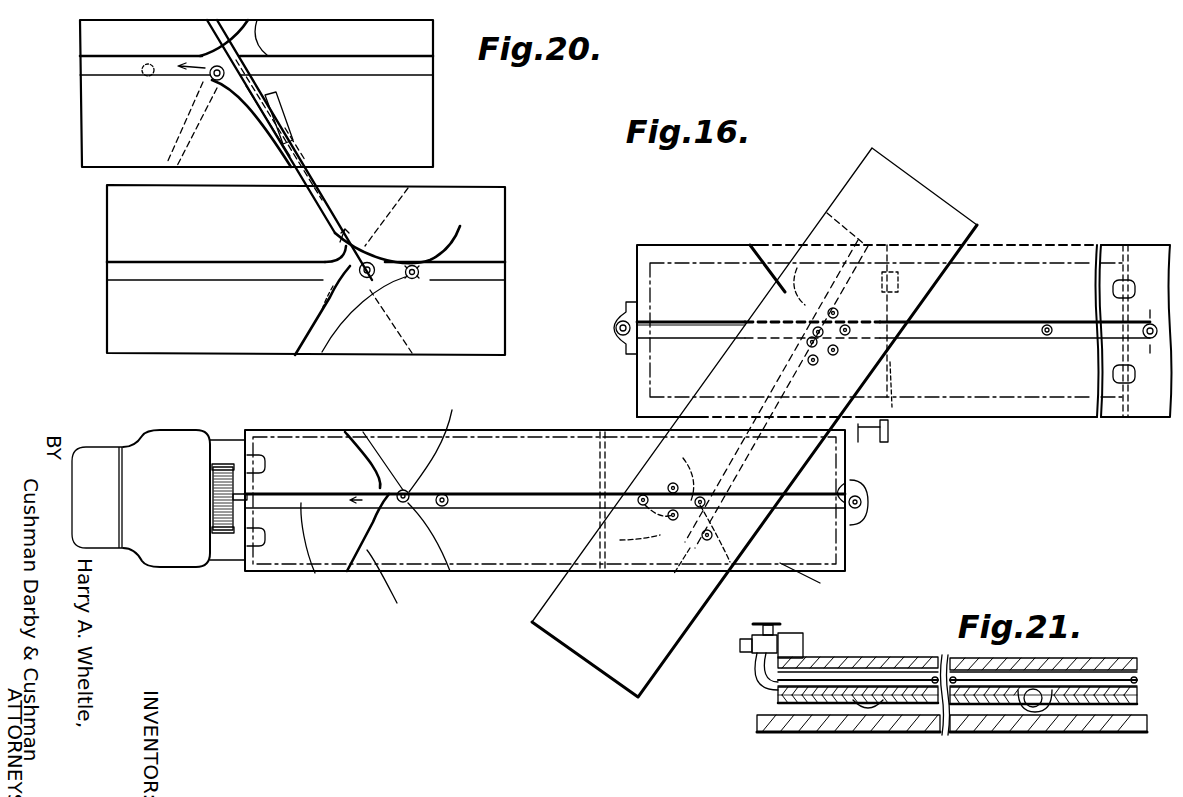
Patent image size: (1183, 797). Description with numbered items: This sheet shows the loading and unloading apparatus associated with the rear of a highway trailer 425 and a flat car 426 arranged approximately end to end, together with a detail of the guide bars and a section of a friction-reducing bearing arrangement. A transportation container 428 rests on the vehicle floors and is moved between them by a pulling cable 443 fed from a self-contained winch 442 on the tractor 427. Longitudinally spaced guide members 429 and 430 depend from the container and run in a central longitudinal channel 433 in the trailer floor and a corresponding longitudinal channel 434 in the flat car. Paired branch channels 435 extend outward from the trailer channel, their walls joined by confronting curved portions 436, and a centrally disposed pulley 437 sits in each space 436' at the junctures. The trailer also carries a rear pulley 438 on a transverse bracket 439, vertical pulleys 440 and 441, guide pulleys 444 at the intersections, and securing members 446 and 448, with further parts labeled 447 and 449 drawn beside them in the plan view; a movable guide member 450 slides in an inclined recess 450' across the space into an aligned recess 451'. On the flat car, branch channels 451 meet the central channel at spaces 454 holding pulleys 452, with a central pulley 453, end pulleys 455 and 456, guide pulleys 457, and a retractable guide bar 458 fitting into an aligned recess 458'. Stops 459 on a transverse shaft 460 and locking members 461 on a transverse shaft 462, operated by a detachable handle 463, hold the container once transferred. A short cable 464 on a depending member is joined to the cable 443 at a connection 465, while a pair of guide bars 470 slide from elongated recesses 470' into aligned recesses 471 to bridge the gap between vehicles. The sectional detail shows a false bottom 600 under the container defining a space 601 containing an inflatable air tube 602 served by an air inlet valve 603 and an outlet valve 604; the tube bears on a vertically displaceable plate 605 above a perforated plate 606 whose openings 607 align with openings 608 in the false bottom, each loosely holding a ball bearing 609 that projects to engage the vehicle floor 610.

In FIG. 20, the highway trailer 425 is at (500, 222).
In FIG. 16, the highway trailer 425 is at (844, 556).
In FIG. 21, the highway trailer 425 is at (757, 744).
In FIG. 20, the flat car 426 is at (433, 141).
In FIG. 16, the flat car 426 is at (1113, 248).
In FIG. 16, the tractor 427 is at (163, 440).
In FIG. 16, the transportation container 428 is at (1020, 397).
In FIG. 21, the transportation container 428 is at (1077, 663).
In FIG. 20, the guide member 429 is at (446, 251).
In FIG. 16, the guide member 429 is at (890, 310).
In FIG. 20, the guide member 430 is at (148, 78).
In FIG. 16, the guide member 430 is at (1046, 331).
In FIG. 20, the longitudinal channel 433 is at (107, 277).
In FIG. 16, the longitudinal channel 433 is at (517, 508).
In FIG. 20, the longitudinal channel 434 is at (90, 68).
In FIG. 16, the longitudinal channel 434 is at (688, 330).
In FIG. 20, the branch channel 435 is at (324, 211).
In FIG. 16, the branch channel 435 is at (367, 445).
In FIG. 16, the curved portion 436 is at (440, 490).
In FIG. 20, the space 436' is at (305, 310).
In FIG. 16, the space 436' is at (483, 532).
In FIG. 20, the pulley 437 is at (388, 228).
In FIG. 16, the pulley 437 is at (404, 489).
In FIG. 16, the pulley 438 is at (862, 501).
In FIG. 16, the transverse bracket 439 is at (854, 515).
In FIG. 16, the vertical pulley 440 is at (235, 494).
In FIG. 16, the vertical pulley 441 is at (851, 482).
In FIG. 16, the winch 442 is at (222, 466).
In FIG. 16, the pulling cable 443 is at (1084, 340).
In FIG. 16, the guide pulley 444 is at (677, 490).
In FIG. 16, the member 446 is at (266, 461).
In FIG. 16, the stop 447 is at (257, 440).
In FIG. 16, the member 448 is at (588, 470).
In FIG. 16, the pin 449 is at (600, 478).
In FIG. 20, the movable guide member 450 is at (314, 283).
In FIG. 16, the movable guide member 450 is at (726, 524).
In FIG. 20, the inclined recess 450' is at (418, 321).
In FIG. 16, the inclined recess 450' is at (738, 552).
In FIG. 20, the branch channel 451 is at (296, 85).
In FIG. 16, the branch channel 451 is at (749, 268).
In FIG. 20, the aligned recess 451' is at (296, 249).
In FIG. 20, the pulley 452 is at (208, 86).
In FIG. 16, the pulley 452 is at (783, 394).
In FIG. 16, the pulley 453 is at (1140, 338).
In FIG. 20, the space 454 is at (204, 57).
In FIG. 16, the space 454 is at (797, 340).
In FIG. 16, the pulley 455 is at (618, 328).
In FIG. 16, the pulley 456 is at (827, 213).
In FIG. 16, the guide pulley 457 is at (830, 363).
In FIG. 20, the retractable guide bar 458 is at (302, 47).
In FIG. 20, the aligned recess 458' is at (292, 130).
In FIG. 20, the stop 459 is at (201, 21).
In FIG. 16, the stop 459 is at (1113, 286).
In FIG. 16, the transverse shaft 460 is at (1120, 417).
In FIG. 16, the locking member 461 is at (893, 293).
In FIG. 16, the transverse shaft 462 is at (890, 407).
In FIG. 16, the detachable handle 463 is at (893, 430).
In FIG. 16, the short cable 464 is at (720, 479).
In FIG. 16, the connection 465 is at (757, 433).
In FIG. 20, the guide bar 470 is at (296, 150).
In FIG. 20, the elongated recess 470' is at (327, 136).
In FIG. 20, the aligned recess 471 is at (308, 213).
In FIG. 21, the false bottom 600 is at (827, 710).
In FIG. 21, the longitudinal space 601 is at (910, 659).
In FIG. 21, the inflatable air tube 602 is at (823, 676).
In FIG. 21, the air inlet valve 603 is at (764, 625).
In FIG. 21, the outlet valve 604 is at (750, 658).
In FIG. 21, the vertically displaceable plate 605 is at (997, 688).
In FIG. 21, the perforated plate 606 is at (1134, 698).
In FIG. 21, the opening 607 is at (1053, 708).
In FIG. 21, the opening 608 is at (1013, 708).
In FIG. 21, the ball bearing 609 is at (870, 712).
In FIG. 21, the floor 610 is at (1113, 728).